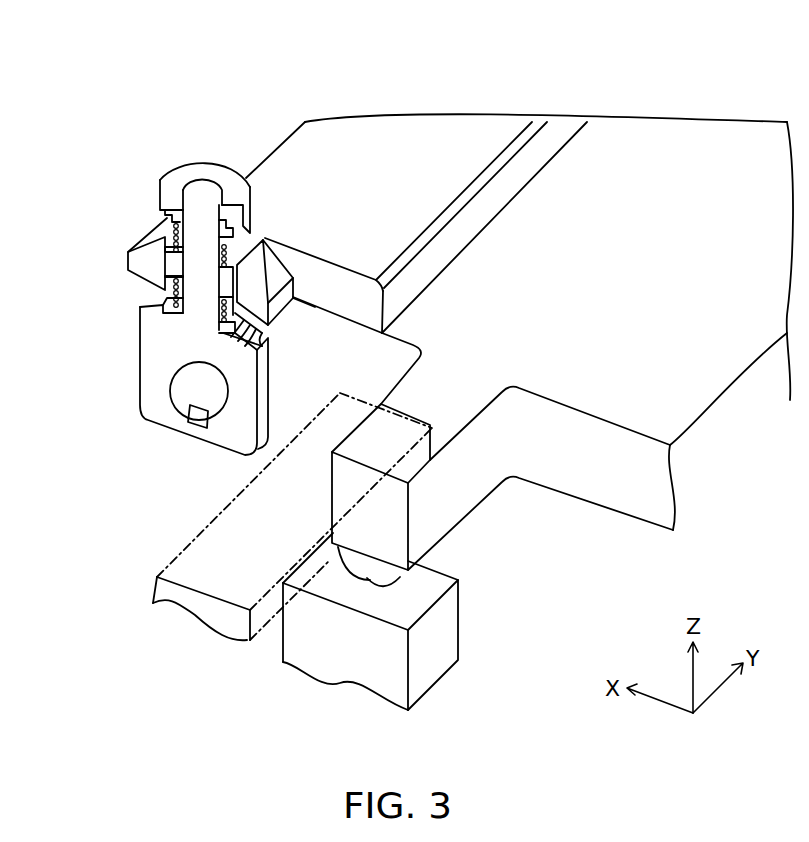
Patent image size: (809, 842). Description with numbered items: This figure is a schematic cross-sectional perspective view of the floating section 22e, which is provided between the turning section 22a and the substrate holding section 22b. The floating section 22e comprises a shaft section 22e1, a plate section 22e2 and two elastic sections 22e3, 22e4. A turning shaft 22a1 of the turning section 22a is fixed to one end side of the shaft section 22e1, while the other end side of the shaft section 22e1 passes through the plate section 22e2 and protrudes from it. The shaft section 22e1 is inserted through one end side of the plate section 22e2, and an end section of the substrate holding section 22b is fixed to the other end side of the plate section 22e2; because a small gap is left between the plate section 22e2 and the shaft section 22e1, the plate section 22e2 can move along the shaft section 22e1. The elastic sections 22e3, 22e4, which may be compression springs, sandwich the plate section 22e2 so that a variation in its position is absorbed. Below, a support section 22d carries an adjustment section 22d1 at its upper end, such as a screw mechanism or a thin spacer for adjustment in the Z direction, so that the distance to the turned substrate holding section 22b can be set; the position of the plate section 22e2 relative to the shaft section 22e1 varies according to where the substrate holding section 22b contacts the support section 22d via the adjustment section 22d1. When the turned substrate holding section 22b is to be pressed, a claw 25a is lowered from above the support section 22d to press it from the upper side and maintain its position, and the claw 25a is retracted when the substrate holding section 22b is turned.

The turning section 22a is at (313, 110).
The turning shaft 22a1 is at (187, 383).
The substrate holding section 22b is at (583, 470).
The support section 22d is at (437, 653).
The adjustment section 22d1 is at (370, 565).
The floating section 22e is at (118, 226).
The shaft section 22e1 is at (152, 377).
The plate section 22e2 is at (137, 267).
The elastic section 22e3 is at (167, 290).
The elastic section 22e4 is at (167, 218).
The claw 25a is at (233, 593).